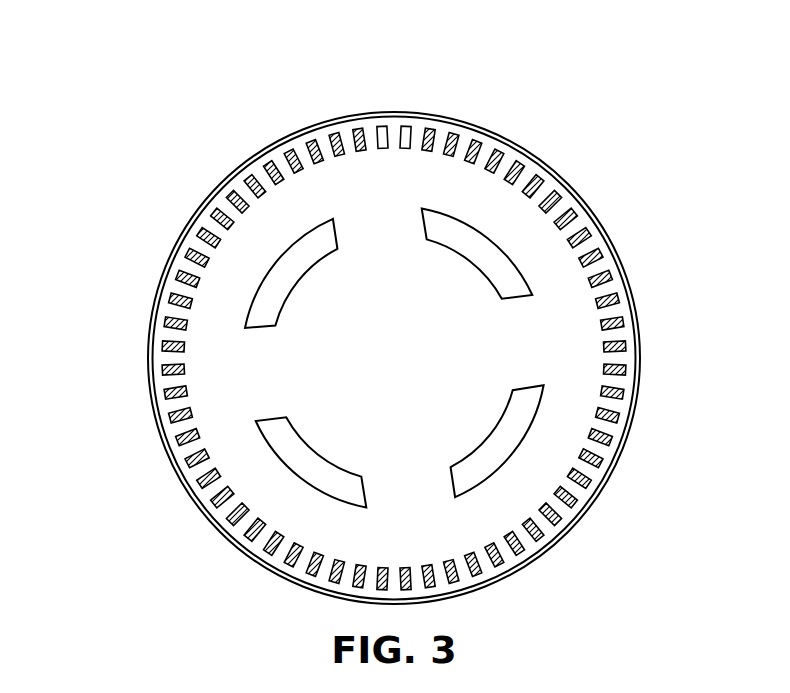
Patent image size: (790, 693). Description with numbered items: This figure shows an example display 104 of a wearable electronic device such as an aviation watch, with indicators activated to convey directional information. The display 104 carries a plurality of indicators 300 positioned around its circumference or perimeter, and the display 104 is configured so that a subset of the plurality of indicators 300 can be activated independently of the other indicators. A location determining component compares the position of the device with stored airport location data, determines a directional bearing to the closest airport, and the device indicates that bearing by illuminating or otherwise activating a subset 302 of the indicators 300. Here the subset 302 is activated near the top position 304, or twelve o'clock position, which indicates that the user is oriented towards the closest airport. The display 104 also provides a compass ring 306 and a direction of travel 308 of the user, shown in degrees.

The display 104 is at (258, 138).
The plurality of indicators 300 is at (158, 345).
The subset of indicators 302 is at (382, 125).
The top position 304 is at (394, 304).
The compass ring 306 is at (508, 273).
The direction of travel 308 is at (462, 378).